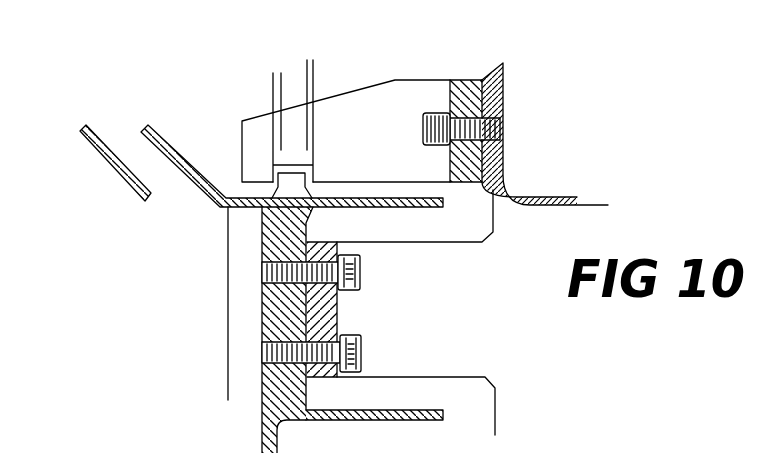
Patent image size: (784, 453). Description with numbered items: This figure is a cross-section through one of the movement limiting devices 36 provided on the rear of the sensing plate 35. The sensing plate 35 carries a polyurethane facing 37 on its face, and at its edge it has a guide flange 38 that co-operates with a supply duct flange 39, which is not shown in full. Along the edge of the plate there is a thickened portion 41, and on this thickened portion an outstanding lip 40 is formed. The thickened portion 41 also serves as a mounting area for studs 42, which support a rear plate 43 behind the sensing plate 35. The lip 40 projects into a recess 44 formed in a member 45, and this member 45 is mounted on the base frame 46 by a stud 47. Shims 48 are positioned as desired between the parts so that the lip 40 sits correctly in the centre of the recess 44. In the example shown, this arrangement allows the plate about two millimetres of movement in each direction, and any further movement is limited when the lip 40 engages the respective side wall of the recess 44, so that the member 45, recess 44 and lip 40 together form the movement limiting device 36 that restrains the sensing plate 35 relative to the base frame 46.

The sensing plate 35 is at (300, 422).
The movement limiting device 36 is at (441, 330).
The polyurethane facing 37 is at (228, 335).
The guide flange 38 is at (188, 158).
The supply duct flange 39 is at (132, 192).
The outstanding lip 40 is at (292, 193).
The thickened portion 41 is at (306, 233).
The studs 42 is at (358, 337).
The rear plate 43 is at (463, 375).
The recess 44 is at (312, 168).
The member 45 is at (403, 90).
The base frame 46 is at (522, 197).
The stud 47 is at (500, 123).
The shims 48 is at (480, 191).